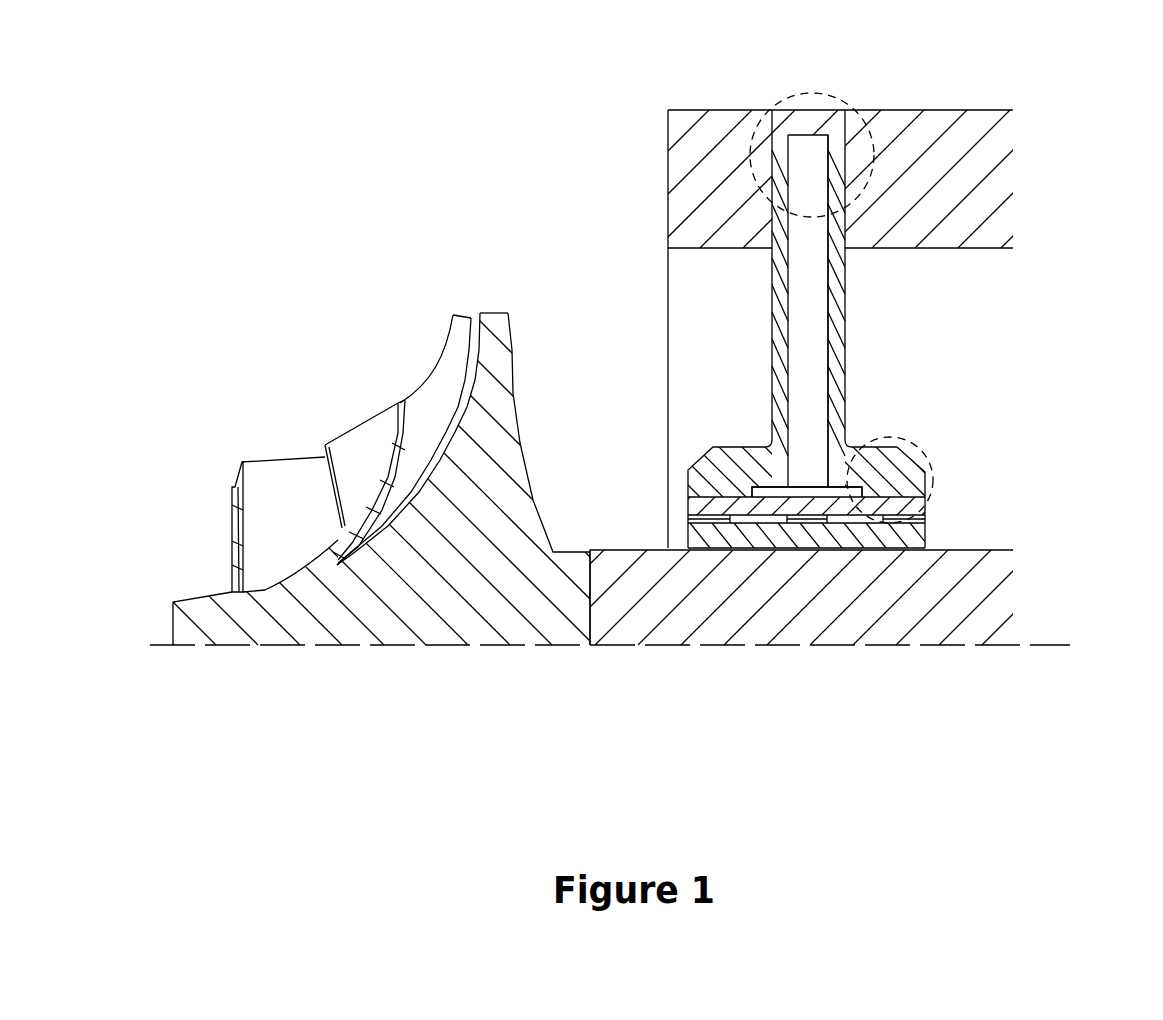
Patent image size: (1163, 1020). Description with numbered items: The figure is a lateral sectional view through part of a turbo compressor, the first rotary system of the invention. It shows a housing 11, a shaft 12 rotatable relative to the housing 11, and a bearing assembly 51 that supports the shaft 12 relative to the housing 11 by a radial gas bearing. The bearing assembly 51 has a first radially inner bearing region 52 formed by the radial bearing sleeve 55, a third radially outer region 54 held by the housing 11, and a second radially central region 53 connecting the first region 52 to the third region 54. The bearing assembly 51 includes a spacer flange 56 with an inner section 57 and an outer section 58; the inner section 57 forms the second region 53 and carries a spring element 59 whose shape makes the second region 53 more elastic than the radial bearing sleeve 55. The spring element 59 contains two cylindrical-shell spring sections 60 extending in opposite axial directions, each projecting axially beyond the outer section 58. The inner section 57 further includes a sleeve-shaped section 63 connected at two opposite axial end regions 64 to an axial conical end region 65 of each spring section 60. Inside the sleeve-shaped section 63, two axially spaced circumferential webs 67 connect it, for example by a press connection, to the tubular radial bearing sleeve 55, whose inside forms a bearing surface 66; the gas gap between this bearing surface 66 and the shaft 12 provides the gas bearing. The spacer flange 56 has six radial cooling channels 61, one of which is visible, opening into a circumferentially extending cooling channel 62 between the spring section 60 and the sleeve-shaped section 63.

The housing 11 is at (990, 160).
The shaft 12 is at (965, 632).
The bearing assembly 51 is at (760, 225).
The first radially inner bearing region 52 is at (865, 500).
The second radially central region 53 is at (913, 488).
The third radially outer region 54 is at (873, 138).
The radial bearing sleeve 55 is at (865, 500).
The spacer flange 56 is at (847, 282).
The inner section 57 is at (862, 430).
The outer section 58 is at (858, 336).
The spring element 59 is at (933, 477).
The spring sections 60 is at (807, 493).
The cooling channels 61 is at (815, 250).
The circumferentially extending cooling channel 62 is at (735, 460).
The sleeve-shaped section 63 is at (730, 500).
The axial end regions 64 is at (868, 535).
The axial conical end region 65 is at (905, 495).
The bearing surface 66 is at (707, 550).
The webs 67 is at (853, 519).